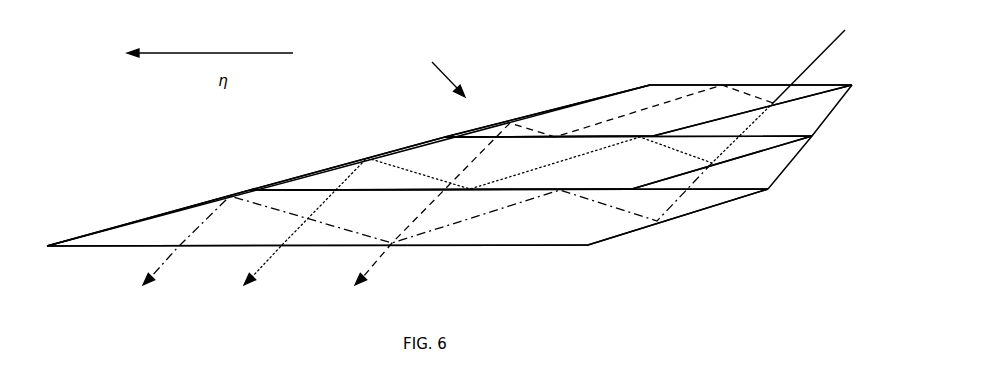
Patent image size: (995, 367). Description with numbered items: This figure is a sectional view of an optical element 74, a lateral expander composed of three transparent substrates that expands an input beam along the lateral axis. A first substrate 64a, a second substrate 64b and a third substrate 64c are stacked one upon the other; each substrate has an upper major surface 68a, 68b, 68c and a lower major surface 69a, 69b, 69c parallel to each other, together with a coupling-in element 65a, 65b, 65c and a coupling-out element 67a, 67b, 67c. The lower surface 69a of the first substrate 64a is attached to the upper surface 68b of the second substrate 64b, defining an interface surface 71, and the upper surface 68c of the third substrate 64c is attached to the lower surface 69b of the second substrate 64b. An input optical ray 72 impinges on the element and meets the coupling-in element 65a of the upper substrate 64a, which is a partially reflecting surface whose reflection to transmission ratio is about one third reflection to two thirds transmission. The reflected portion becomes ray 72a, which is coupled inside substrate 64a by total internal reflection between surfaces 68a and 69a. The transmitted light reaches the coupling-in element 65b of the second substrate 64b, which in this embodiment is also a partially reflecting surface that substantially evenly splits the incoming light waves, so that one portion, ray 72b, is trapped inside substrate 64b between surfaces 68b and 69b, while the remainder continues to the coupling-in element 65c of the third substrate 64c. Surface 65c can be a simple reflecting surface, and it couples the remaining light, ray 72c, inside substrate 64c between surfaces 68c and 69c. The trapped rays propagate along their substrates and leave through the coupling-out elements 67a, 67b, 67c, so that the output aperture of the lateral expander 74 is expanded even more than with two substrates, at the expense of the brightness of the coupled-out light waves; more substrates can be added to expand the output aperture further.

The first substrate 64a is at (617, 110).
The second substrate 64b is at (738, 170).
The third substrate 64c is at (502, 222).
The coupling-in element of the first substrate 65a is at (728, 110).
The coupling-in element of the second substrate 65b is at (762, 152).
The coupling-in element of the third substrate 65c is at (667, 223).
The coupling-out element of the first substrate 67a is at (567, 105).
The coupling-out element of the second substrate 67b is at (333, 166).
The coupling-out element of the third substrate 67c is at (193, 204).
The upper major surface of the first substrate 68a is at (667, 85).
The upper major surface of the second substrate 68b is at (788, 138).
The upper major surface of the third substrate 68c is at (705, 191).
The lower major surface of the first substrate 69a is at (527, 138).
The lower major surface of the second substrate 69b is at (302, 190).
The lower major surface of the third substrate 69c is at (567, 246).
The interface surface 71 is at (448, 138).
The optical ray 72 is at (815, 60).
The first split ray 72a is at (373, 258).
The second split ray 72b is at (272, 252).
The third split ray 72c is at (167, 259).
The optical element 74 is at (440, 70).